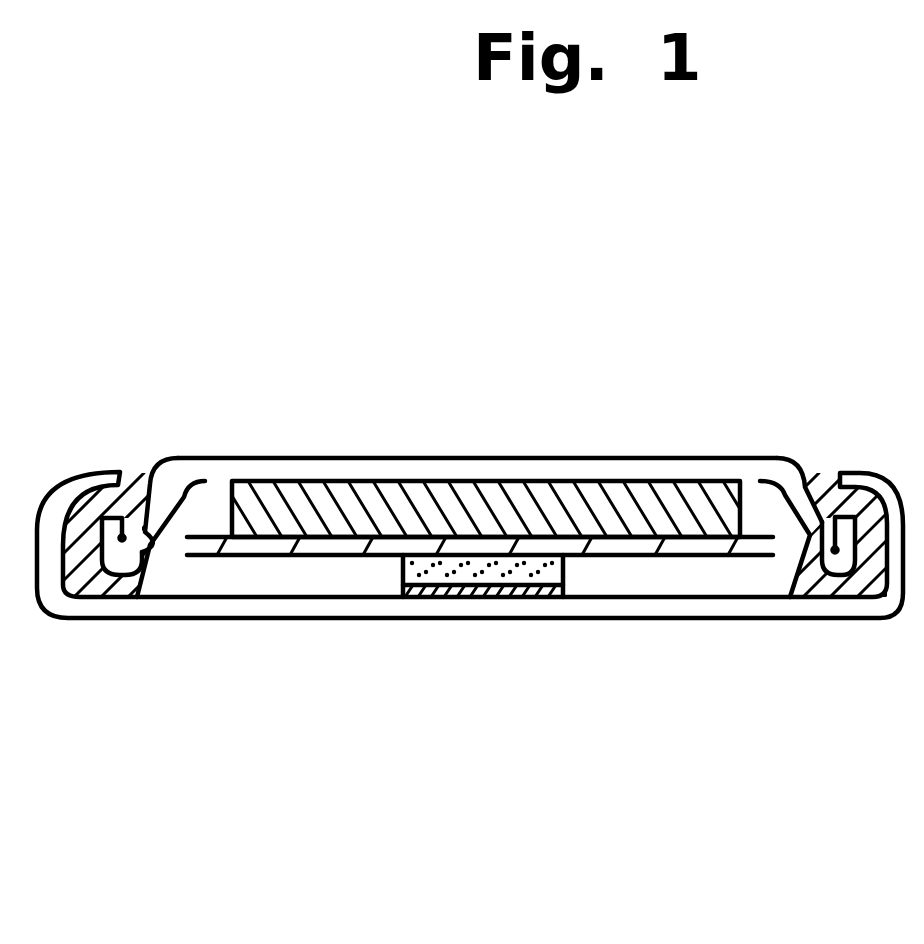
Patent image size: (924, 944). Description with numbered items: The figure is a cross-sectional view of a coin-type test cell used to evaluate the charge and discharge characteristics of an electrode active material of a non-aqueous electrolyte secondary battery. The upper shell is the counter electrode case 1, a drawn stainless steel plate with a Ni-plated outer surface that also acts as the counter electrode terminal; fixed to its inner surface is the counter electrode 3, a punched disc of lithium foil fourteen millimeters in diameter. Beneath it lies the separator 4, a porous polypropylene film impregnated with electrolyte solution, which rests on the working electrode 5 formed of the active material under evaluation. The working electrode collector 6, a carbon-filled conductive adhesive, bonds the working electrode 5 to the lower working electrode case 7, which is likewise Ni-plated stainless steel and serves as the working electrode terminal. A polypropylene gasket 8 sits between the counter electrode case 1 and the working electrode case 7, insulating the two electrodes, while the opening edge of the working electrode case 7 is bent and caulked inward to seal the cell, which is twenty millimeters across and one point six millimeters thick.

The counter electrode case 1 is at (543, 467).
The counter electrode 3 is at (322, 498).
The separator 4 is at (697, 548).
The working electrode 5 is at (418, 567).
The working electrode collector 6 is at (517, 593).
The working electrode case 7 is at (685, 608).
The gasket 8 is at (868, 565).